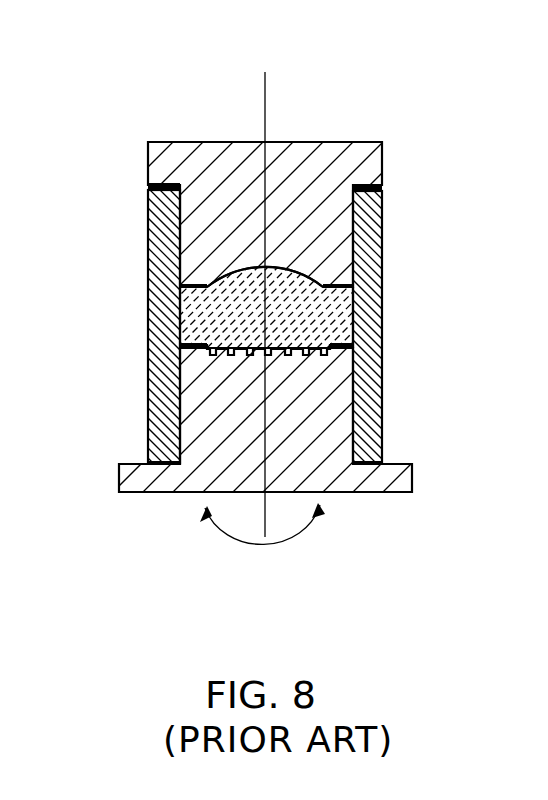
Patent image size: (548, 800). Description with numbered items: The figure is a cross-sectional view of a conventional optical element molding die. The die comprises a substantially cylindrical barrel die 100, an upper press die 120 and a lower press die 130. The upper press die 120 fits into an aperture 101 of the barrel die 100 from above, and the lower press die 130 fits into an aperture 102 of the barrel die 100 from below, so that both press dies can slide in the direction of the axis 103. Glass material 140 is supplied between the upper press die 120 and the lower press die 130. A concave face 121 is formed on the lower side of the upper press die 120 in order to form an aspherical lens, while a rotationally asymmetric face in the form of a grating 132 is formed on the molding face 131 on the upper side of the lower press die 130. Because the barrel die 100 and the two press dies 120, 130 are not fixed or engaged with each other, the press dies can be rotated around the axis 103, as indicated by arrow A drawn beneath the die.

The barrel die 100 is at (378, 253).
The aperture 101 is at (384, 188).
The aperture 102 is at (367, 465).
The axis 103 is at (265, 90).
The upper press die 120 is at (382, 142).
The concave face 121 is at (232, 278).
The lower press die 130 is at (333, 427).
The molding face 131 is at (180, 328).
The grating 132 is at (208, 346).
The glass material 140 is at (342, 316).
The arrow A is at (264, 558).